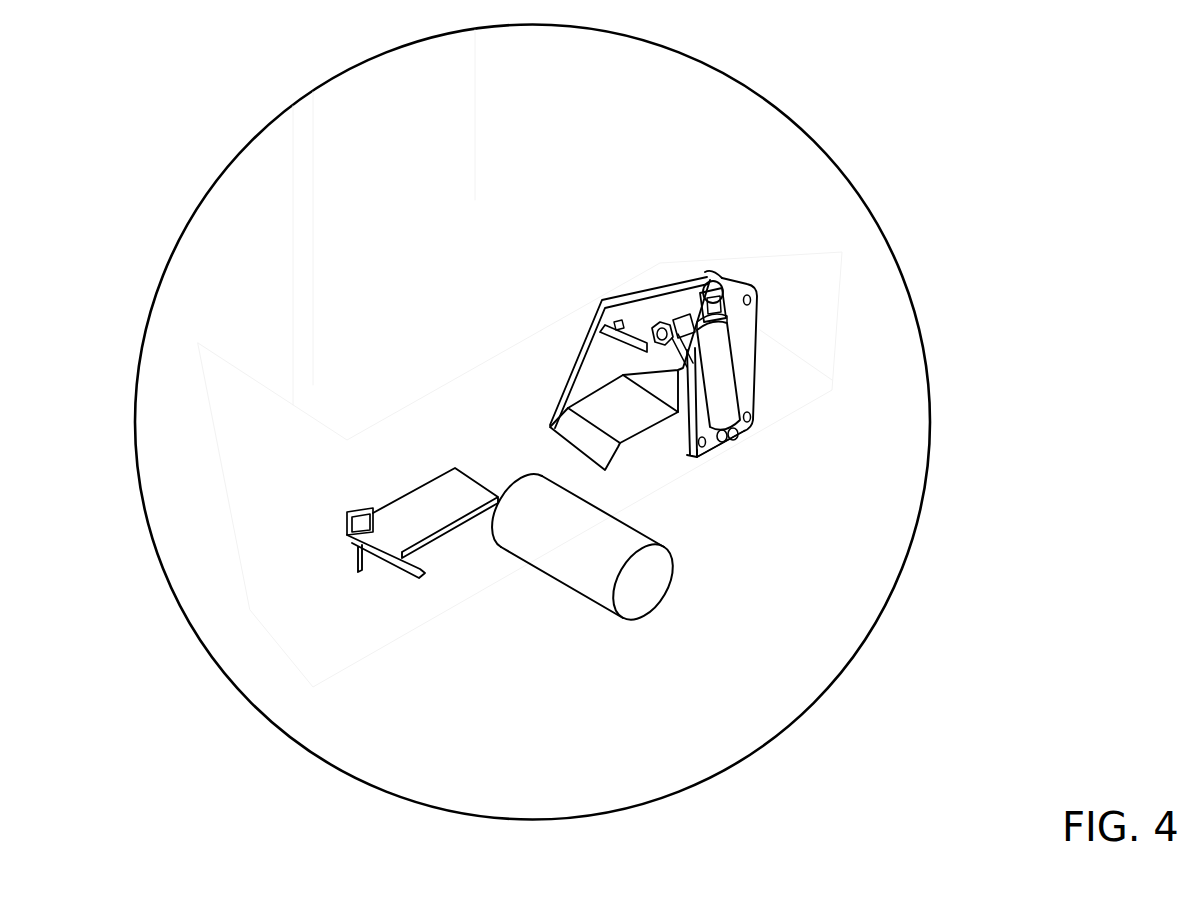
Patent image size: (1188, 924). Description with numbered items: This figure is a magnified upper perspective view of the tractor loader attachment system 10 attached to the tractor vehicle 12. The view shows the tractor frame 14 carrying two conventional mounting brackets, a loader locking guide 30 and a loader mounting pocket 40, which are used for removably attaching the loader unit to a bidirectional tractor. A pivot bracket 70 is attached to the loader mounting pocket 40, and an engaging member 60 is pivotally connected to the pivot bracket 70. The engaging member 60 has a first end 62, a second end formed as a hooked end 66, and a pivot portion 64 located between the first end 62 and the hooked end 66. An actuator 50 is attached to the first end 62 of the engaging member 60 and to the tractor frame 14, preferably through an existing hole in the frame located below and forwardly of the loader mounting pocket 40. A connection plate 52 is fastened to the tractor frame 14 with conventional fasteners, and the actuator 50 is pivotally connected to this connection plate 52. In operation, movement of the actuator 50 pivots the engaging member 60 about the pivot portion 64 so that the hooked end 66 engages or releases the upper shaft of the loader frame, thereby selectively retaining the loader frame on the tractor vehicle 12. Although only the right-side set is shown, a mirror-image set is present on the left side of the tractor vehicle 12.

The tractor loader attachment system 10 is at (927, 618).
The tractor vehicle 12 is at (223, 311).
The tractor frame 14 is at (783, 343).
The loader locking guide 30 is at (450, 533).
The loader mounting pocket 40 is at (683, 462).
The actuator 50 is at (728, 400).
The connection plate 52 is at (752, 376).
The engaging member 60 is at (712, 274).
The first end 62 is at (828, 316).
The pivot portion 64 is at (640, 332).
The hooked end 66 is at (602, 322).
The pivot bracket 70 is at (655, 432).